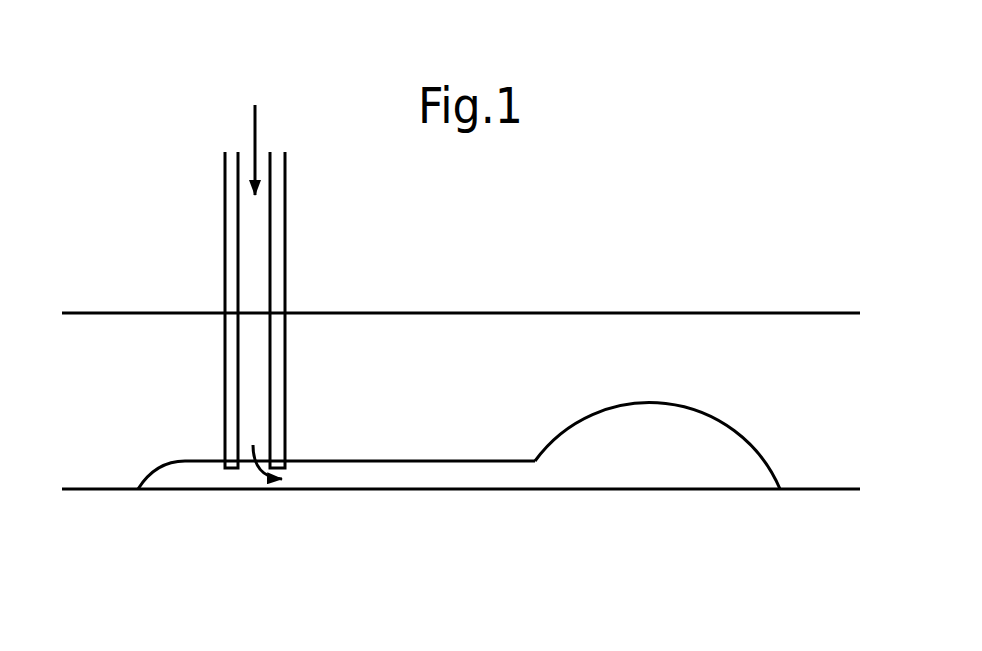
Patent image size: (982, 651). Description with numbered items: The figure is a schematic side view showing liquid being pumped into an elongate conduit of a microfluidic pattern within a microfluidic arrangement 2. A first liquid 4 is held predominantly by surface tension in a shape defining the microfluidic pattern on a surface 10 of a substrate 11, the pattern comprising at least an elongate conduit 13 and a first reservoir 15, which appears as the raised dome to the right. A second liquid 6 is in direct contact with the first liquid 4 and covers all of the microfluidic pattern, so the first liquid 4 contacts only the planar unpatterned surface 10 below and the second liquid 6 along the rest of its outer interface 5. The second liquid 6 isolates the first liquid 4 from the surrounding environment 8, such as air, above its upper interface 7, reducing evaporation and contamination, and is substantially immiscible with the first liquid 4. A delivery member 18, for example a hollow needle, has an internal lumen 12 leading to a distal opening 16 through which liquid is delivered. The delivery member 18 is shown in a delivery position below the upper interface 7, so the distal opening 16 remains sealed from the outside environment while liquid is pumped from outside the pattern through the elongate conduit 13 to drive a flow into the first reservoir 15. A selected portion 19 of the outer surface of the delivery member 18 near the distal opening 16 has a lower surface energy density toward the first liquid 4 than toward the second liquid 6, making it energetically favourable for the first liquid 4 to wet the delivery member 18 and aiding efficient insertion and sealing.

The microfluidic arrangement 2 is at (461, 372).
The first liquid 4 is at (576, 474).
The interface 5 is at (702, 412).
The second liquid 6 is at (459, 389).
The upper interface 7 is at (817, 312).
The surrounding environment 8 is at (459, 245).
The surface 10 is at (818, 489).
The substrate 11 is at (459, 545).
The internal lumen 12 is at (252, 358).
The elongate conduit 13 is at (388, 450).
The first reservoir 15 is at (603, 400).
The distal opening 16 is at (252, 472).
The delivery member 18 is at (215, 240).
The selected portion 19 is at (225, 453).